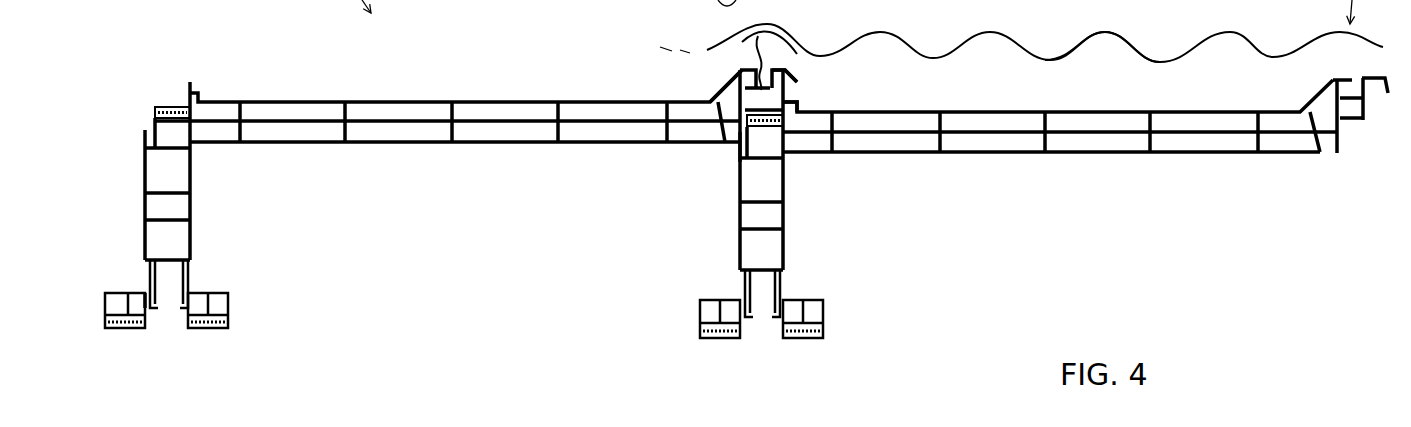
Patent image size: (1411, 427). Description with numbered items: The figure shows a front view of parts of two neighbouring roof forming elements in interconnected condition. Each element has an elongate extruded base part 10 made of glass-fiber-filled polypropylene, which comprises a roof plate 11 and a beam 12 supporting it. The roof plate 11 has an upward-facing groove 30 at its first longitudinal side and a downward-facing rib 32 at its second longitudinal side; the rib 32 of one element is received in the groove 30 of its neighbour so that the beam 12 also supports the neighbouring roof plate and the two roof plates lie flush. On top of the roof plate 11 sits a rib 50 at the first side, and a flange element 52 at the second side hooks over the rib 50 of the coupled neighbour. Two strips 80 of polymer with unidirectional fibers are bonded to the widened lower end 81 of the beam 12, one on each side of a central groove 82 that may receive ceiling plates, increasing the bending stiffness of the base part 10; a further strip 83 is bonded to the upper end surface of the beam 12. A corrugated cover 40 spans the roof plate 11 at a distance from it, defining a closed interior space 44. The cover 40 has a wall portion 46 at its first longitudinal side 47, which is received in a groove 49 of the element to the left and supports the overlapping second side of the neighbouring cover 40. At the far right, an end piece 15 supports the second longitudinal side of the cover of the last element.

The base part 10 is at (158, 72).
The roof plate 11 is at (427, 163).
The beam 12 is at (212, 223).
The end piece 15 is at (1373, 51).
The groove 30 is at (738, 147).
The rib 32 is at (733, 150).
The cover 40 is at (720, 50).
The interior space 44 is at (1128, 98).
The wall portion 46 is at (768, 44).
The first longitudinal side 47 is at (791, 31).
The groove 49 is at (737, 102).
The rib 50 is at (792, 95).
The flange element 52 is at (794, 80).
The strips 80 is at (110, 331).
The lower end 81 is at (127, 281).
The central groove 82 is at (168, 316).
The further strip 83 is at (173, 105).